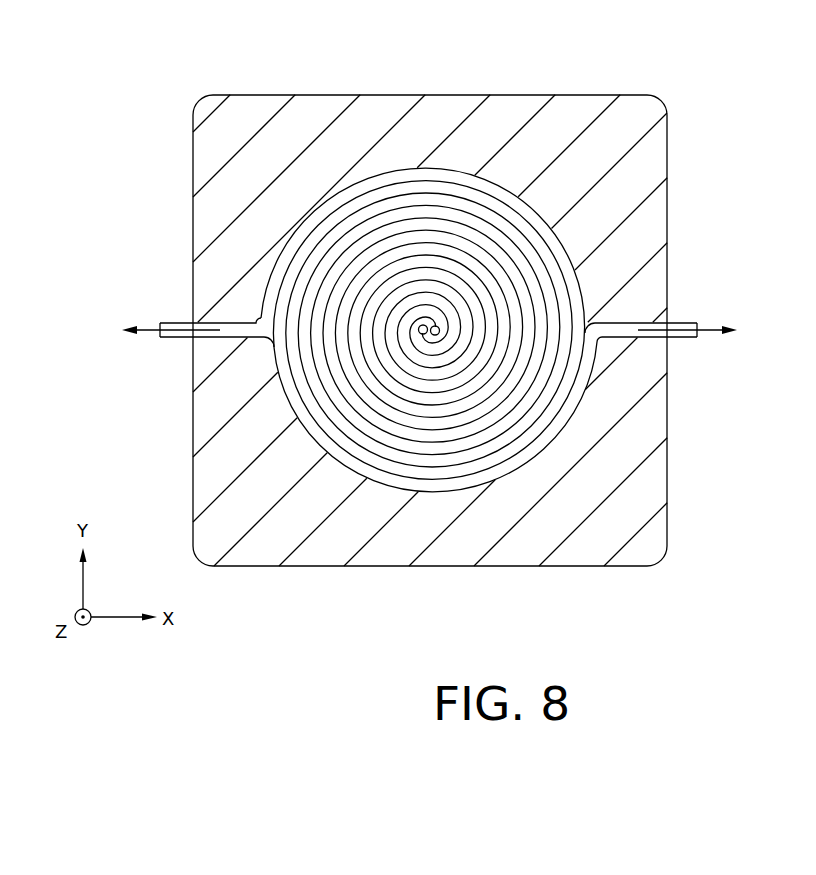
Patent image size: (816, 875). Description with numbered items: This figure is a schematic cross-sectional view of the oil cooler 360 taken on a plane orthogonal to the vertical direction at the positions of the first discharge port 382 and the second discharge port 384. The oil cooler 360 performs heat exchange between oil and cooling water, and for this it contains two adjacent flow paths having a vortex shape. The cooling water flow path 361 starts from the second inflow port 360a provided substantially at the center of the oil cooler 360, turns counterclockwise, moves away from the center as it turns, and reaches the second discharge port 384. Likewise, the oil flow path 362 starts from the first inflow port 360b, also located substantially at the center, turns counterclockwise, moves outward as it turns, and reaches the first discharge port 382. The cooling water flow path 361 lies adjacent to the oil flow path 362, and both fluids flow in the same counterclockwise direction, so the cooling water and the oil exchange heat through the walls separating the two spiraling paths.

The oil cooler 360 is at (567, 93).
The cooling water flow path 361 is at (429, 330).
The oil flow path 362 is at (538, 452).
The second inflow port 360a is at (437, 336).
The first inflow port 360b is at (420, 336).
The first discharge port 382 is at (648, 323).
The second discharge port 384 is at (215, 331).